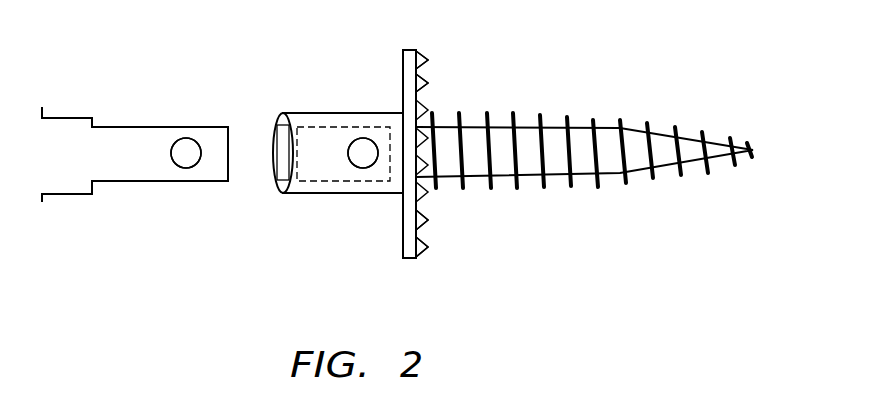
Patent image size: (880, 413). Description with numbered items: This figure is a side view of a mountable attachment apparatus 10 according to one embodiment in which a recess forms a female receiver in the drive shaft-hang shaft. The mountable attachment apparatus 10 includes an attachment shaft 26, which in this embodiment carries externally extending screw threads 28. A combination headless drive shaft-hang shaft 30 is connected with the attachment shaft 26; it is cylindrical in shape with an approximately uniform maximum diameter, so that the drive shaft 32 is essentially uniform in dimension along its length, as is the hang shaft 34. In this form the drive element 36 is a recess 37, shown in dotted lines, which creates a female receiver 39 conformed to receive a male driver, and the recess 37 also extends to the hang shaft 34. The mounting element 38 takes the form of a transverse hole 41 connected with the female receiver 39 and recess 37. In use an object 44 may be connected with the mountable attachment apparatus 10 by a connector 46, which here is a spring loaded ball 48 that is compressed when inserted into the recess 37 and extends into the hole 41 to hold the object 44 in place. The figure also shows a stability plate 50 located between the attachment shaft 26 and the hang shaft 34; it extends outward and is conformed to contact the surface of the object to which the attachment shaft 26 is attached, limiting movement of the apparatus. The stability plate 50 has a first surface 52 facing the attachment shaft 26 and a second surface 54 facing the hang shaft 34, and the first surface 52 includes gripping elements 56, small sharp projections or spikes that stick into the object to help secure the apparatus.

The mountable attachment apparatus 10 is at (683, 53).
The attachment shaft 26 is at (612, 174).
The screw threads 28 is at (516, 115).
The combination headless drive shaft-hang shaft 30 is at (362, 166).
The drive shaft 32 is at (305, 195).
The hang shaft 34 is at (387, 195).
The drive element 36 is at (278, 114).
The recess 37 is at (314, 142).
The mounting element 38 is at (364, 143).
The female receiver 39 is at (273, 167).
The transverse hole 41 is at (358, 170).
The object 44 is at (63, 117).
The connector 46 is at (182, 144).
The spring loaded ball 48 is at (185, 168).
The stability plate 50 is at (415, 258).
The first surface 52 is at (420, 204).
The second surface 54 is at (402, 249).
The gripping element 56 is at (428, 82).